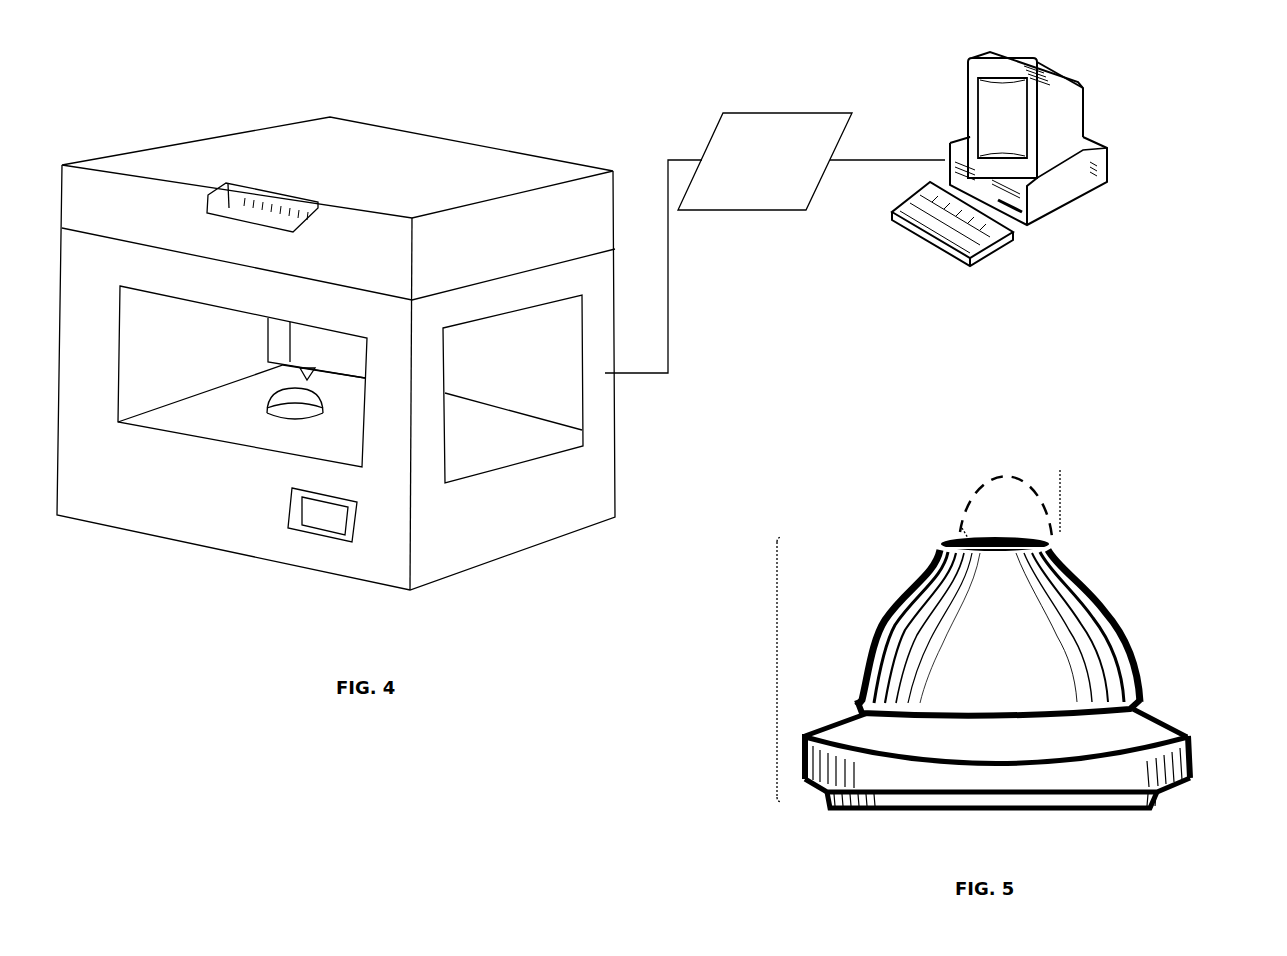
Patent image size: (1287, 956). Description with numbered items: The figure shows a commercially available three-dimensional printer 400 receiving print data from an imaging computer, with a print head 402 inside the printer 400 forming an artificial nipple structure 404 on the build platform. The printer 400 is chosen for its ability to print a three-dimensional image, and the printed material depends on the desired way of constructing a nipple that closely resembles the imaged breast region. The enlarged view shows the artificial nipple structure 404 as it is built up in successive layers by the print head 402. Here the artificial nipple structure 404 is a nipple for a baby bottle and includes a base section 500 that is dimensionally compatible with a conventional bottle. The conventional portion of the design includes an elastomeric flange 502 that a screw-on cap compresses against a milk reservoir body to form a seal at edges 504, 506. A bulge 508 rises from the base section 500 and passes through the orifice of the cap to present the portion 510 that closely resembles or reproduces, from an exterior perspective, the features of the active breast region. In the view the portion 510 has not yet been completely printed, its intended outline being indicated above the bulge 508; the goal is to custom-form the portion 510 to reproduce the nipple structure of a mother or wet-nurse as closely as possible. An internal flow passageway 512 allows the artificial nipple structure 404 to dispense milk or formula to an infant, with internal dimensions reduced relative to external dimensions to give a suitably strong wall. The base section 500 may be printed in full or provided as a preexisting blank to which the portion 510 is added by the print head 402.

In FIG. 4, the 3D printer 400 is at (494, 116).
In FIG. 4, the print head 402 is at (268, 348).
In FIG. 4, the artificial nipple structure 404 is at (270, 410).
In FIG. 5, the artificial nipple structure 404 is at (1028, 661).
In FIG. 5, the base section 500 is at (777, 665).
In FIG. 5, the elastomeric flange 502 is at (1186, 735).
In FIG. 5, the edge 504 is at (997, 744).
In FIG. 5, the edge 506 is at (1166, 795).
In FIG. 5, the bulge 508 is at (998, 621).
In FIG. 5, the portion 510 is at (1062, 498).
In FIG. 5, the internal flow passageway 512 is at (963, 530).